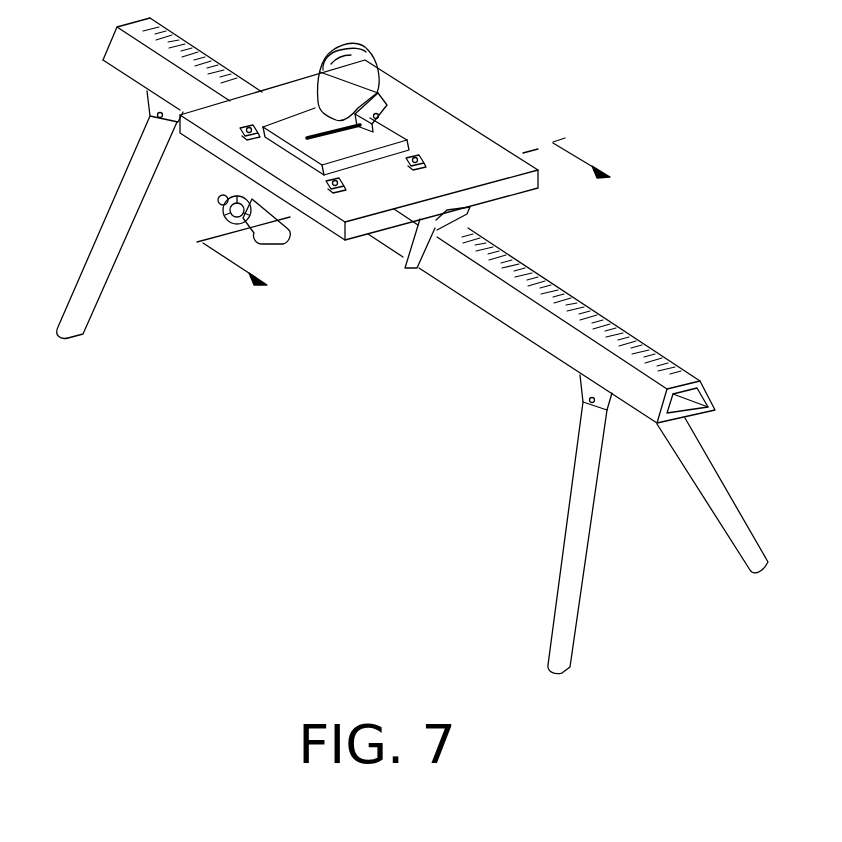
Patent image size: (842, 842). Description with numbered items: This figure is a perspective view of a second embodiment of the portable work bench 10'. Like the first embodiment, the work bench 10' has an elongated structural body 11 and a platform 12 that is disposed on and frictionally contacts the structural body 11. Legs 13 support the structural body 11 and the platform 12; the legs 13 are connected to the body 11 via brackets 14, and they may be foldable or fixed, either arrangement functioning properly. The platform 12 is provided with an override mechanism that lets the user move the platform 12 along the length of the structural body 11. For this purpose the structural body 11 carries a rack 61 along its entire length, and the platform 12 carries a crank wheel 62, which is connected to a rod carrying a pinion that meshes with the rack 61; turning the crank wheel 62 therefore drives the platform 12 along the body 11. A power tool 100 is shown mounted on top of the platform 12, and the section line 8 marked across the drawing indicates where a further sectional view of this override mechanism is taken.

The portable work bench 10' is at (705, 229).
The structural body 11 is at (710, 388).
The platform 12 is at (443, 130).
The legs 13 is at (582, 512).
The brackets 14 is at (152, 103).
The rack 61 is at (518, 274).
The crank wheel 62 is at (222, 212).
The power saw 100 is at (372, 64).
The section line 8- 8 is at (416, 226).